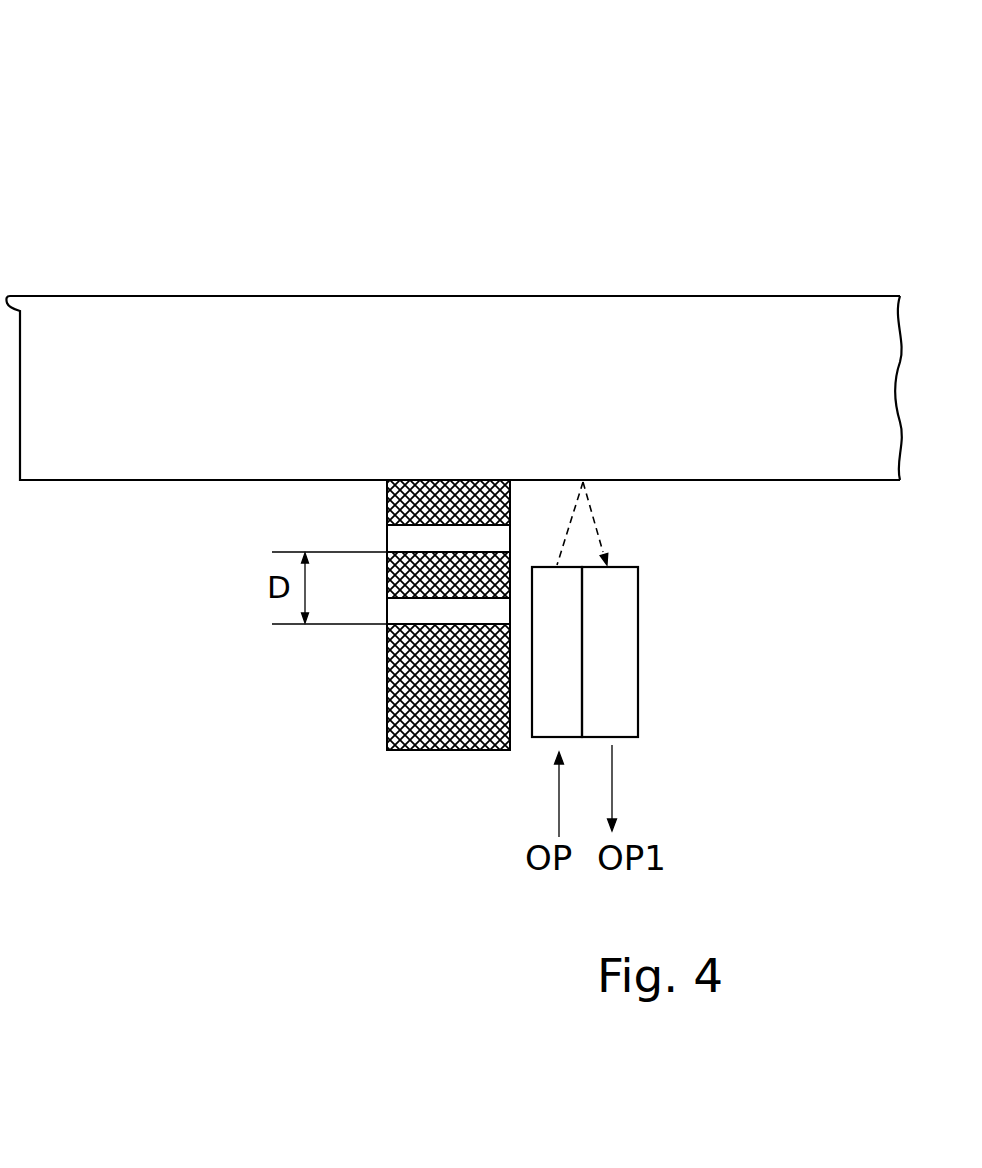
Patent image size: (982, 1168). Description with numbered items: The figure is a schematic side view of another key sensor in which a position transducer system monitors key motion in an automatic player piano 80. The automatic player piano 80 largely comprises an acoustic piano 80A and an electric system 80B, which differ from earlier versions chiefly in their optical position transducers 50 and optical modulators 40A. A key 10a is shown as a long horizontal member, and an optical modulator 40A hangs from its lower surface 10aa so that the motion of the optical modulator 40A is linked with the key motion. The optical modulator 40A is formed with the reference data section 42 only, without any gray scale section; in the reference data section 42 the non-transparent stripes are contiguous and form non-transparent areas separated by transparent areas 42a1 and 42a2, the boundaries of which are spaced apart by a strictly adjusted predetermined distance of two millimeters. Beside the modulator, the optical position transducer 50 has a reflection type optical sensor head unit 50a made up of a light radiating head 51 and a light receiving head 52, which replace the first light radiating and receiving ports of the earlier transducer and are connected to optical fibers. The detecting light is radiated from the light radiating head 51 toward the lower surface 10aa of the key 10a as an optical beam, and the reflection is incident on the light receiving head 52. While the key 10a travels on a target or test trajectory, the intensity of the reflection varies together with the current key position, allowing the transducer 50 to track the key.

The automatic player piano 80 is at (115, 99).
The acoustic piano 80A is at (812, 175).
The electric system 80B is at (131, 570).
The key 10a is at (653, 296).
The lower surface of the key 10aa is at (607, 481).
The reference data section 42 is at (356, 643).
The transparent area 42a1 is at (385, 662).
The transparent area 42a2 is at (407, 540).
The optical modulator 40A is at (404, 810).
The optical position transducer 50 is at (694, 631).
The reflection type optical sensor head unit 50a is at (661, 652).
The light radiating head 51 is at (575, 630).
The light receiving head 52 is at (625, 667).